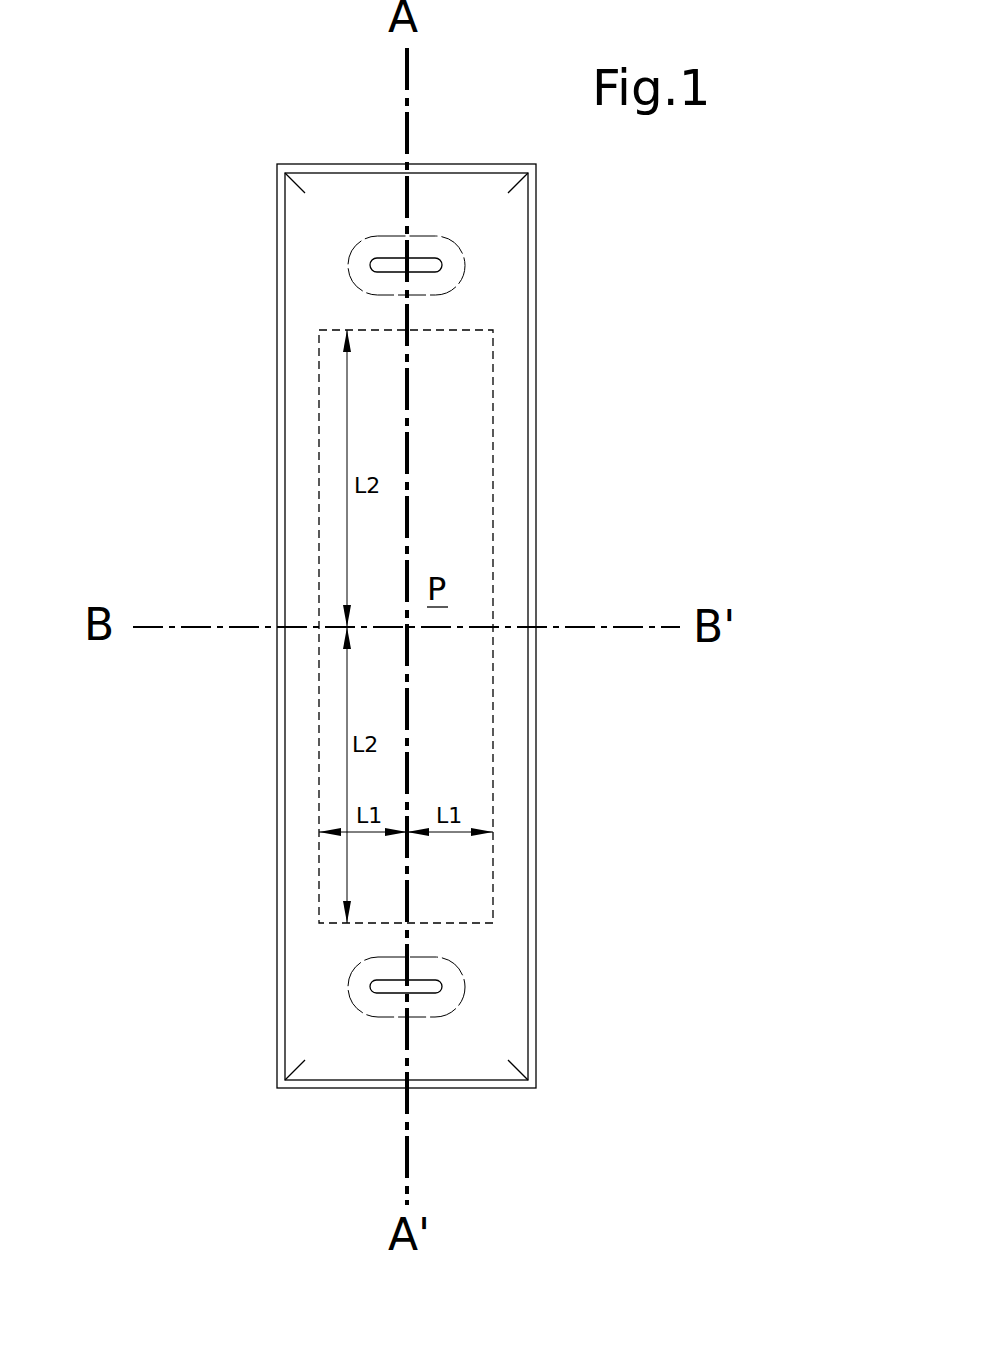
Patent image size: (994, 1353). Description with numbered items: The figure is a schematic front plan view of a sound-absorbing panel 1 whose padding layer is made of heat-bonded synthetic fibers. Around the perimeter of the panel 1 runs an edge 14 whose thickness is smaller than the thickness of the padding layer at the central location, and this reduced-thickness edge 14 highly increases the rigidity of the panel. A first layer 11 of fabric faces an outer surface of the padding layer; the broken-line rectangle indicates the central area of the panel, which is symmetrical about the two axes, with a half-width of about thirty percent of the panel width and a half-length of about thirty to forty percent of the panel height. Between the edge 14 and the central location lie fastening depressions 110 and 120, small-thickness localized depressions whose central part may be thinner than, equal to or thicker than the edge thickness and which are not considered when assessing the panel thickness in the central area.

The sound-absorbing panel 1 is at (592, 811).
The edge 14 is at (536, 319).
The first layer of fabric 11 is at (503, 525).
The fastening depression 120 is at (368, 281).
The fastening depression 110 is at (350, 988).